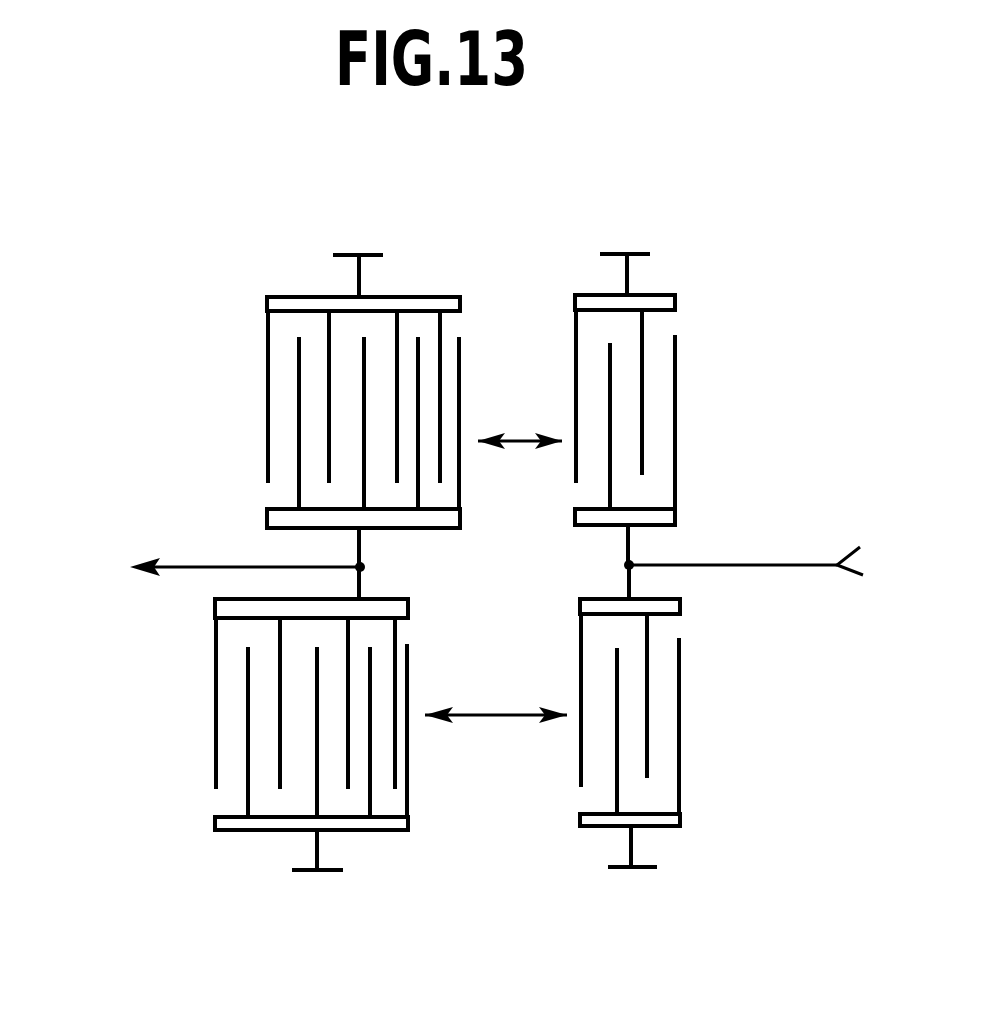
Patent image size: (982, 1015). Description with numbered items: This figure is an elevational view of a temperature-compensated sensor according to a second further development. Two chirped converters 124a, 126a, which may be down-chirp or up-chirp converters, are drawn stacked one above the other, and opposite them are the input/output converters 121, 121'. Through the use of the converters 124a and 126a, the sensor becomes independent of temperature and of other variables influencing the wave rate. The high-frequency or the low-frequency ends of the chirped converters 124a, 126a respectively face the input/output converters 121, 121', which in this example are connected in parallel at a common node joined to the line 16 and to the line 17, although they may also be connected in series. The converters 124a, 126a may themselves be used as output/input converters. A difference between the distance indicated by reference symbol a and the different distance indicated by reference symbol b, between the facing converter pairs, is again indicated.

The converter 124a is at (266, 425).
The converter 126a is at (214, 752).
The input/output converter 121 is at (686, 409).
The input/output converter 121' is at (698, 716).
The output terminal line 17 is at (226, 565).
The input terminal line 16 is at (743, 584).
The distance a is at (496, 694).
The distance b is at (520, 415).